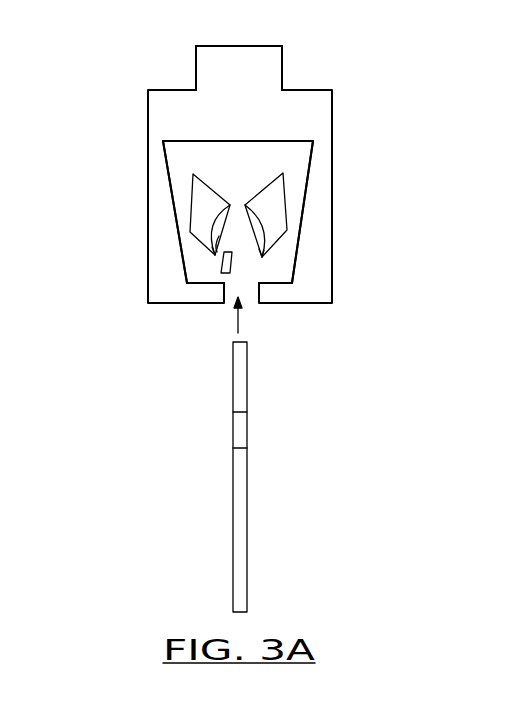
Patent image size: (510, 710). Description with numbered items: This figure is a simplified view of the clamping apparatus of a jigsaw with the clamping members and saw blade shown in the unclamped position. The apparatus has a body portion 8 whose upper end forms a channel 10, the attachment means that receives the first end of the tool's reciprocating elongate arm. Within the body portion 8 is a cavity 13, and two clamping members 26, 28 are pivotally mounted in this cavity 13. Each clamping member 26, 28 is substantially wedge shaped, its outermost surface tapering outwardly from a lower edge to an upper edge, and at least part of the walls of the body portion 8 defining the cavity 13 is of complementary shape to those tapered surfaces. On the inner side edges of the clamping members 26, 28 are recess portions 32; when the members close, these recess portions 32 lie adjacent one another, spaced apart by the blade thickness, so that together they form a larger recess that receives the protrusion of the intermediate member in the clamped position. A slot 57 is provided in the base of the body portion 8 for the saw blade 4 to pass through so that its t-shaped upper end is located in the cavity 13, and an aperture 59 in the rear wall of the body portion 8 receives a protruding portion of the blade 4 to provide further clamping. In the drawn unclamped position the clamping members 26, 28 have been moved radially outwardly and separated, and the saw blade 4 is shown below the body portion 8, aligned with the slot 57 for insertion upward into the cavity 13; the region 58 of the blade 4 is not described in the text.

The saw blade 4 is at (237, 547).
The body portion 8 is at (340, 141).
The channel 10 is at (223, 46).
The cavity 13 is at (213, 172).
The clamping member 26 is at (270, 203).
The clamping member 28 is at (200, 205).
The recess portion 32 is at (215, 255).
The slot 57 is at (247, 302).
The rod segment 58 is at (237, 428).
The aperture 59 is at (232, 265).